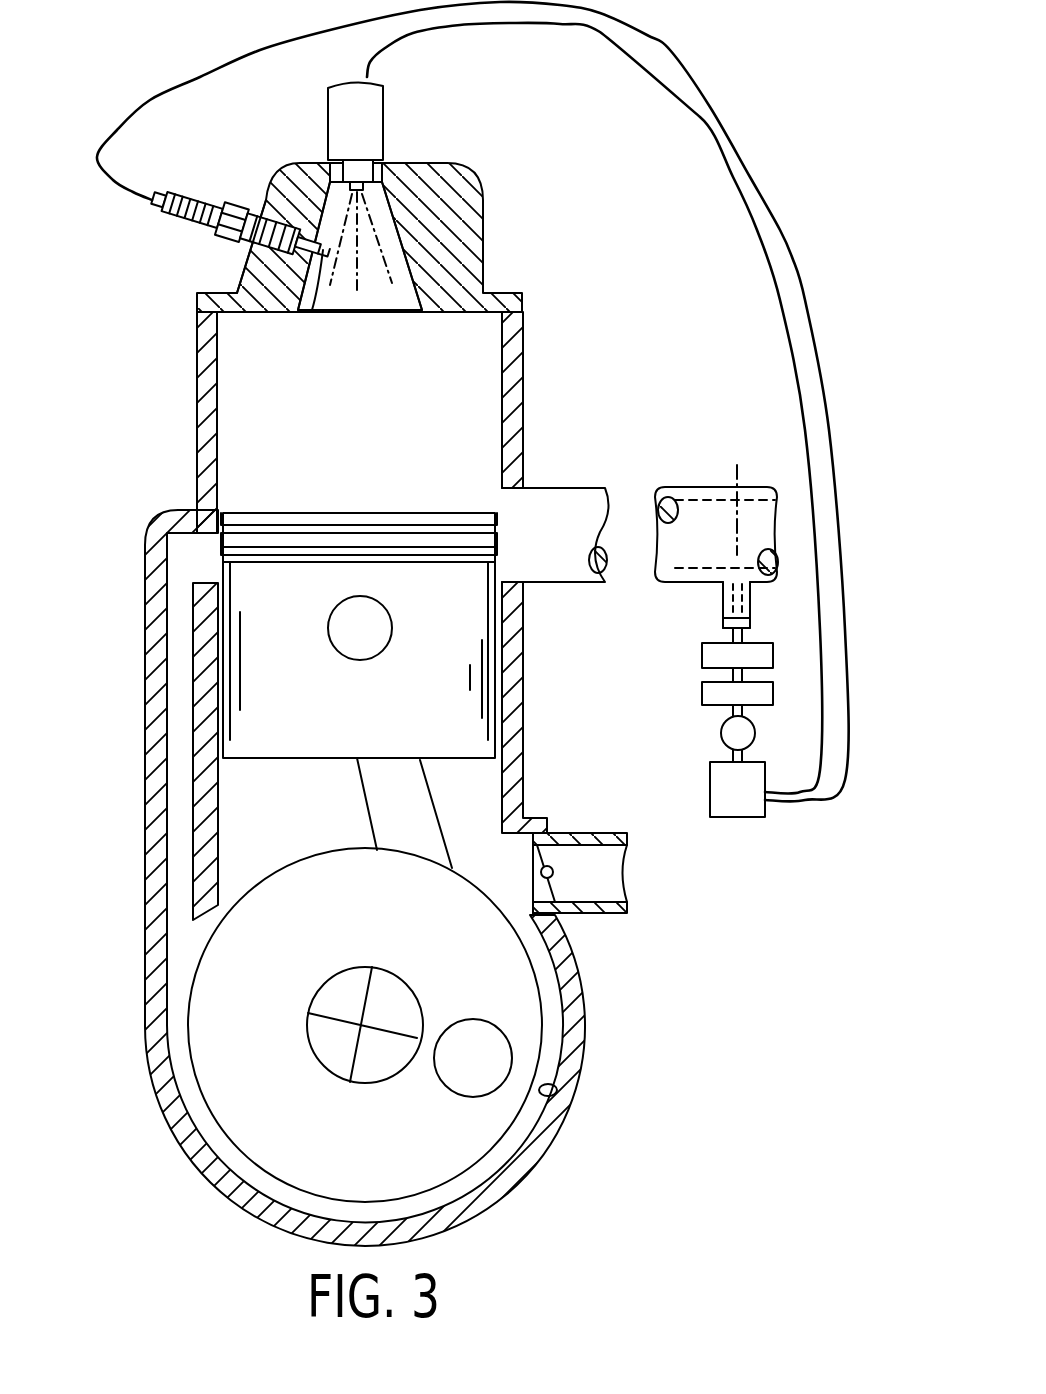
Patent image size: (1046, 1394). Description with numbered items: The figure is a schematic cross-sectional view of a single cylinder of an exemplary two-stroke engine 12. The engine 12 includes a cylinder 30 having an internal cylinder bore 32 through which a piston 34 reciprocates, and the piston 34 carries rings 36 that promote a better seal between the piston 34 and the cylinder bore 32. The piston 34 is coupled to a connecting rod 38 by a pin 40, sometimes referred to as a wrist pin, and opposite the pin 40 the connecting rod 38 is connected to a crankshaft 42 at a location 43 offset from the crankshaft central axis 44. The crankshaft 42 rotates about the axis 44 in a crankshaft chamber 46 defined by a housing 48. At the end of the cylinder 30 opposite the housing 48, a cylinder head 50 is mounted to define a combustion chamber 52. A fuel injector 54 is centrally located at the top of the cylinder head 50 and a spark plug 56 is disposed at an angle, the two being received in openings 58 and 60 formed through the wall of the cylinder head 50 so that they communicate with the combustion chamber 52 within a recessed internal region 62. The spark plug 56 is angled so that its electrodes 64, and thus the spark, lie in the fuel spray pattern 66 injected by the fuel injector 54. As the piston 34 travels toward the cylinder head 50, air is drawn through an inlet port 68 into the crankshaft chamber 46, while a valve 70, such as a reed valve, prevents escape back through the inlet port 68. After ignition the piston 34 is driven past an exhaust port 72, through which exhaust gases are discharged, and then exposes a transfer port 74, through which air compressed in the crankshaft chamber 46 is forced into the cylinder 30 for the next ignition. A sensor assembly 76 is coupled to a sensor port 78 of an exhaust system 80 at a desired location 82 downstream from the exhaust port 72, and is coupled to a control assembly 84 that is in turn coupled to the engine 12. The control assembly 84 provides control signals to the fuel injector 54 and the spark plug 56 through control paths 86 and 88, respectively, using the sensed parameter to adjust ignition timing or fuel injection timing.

The two-stroke engine 12 is at (552, 358).
The cylinder 30 is at (513, 407).
The cylinder bore 32 is at (216, 416).
The piston 34 is at (368, 725).
The rings 36 is at (380, 553).
The connecting rod 38 is at (402, 817).
The pin 40 is at (347, 635).
The crankshaft 42 is at (450, 1160).
The location 43 is at (487, 1048).
The crankshaft central axis 44 is at (317, 1047).
The crankshaft chamber 46 is at (556, 1085).
The housing 48 is at (543, 1157).
The cylinder head 50 is at (457, 187).
The combustion chamber 52 is at (380, 322).
The fuel injector 54 is at (367, 118).
The spark plug 56 is at (202, 197).
The opening 58 is at (338, 180).
The opening 60 is at (270, 261).
The recessed internal region 62 is at (400, 293).
The electrodes 64 is at (323, 262).
The fuel spray pattern 66 is at (358, 268).
The inlet port 68 is at (590, 895).
The valve 70 is at (577, 833).
The exhaust port 72 is at (517, 500).
The transfer port 74 is at (180, 547).
The sensor assembly 76 is at (658, 680).
The sensor port 78 is at (717, 593).
The exhaust system 80 is at (700, 487).
The location 82 is at (737, 480).
The control assembly 84 is at (755, 804).
The control path 86 is at (677, 97).
The control path 88 is at (672, 55).